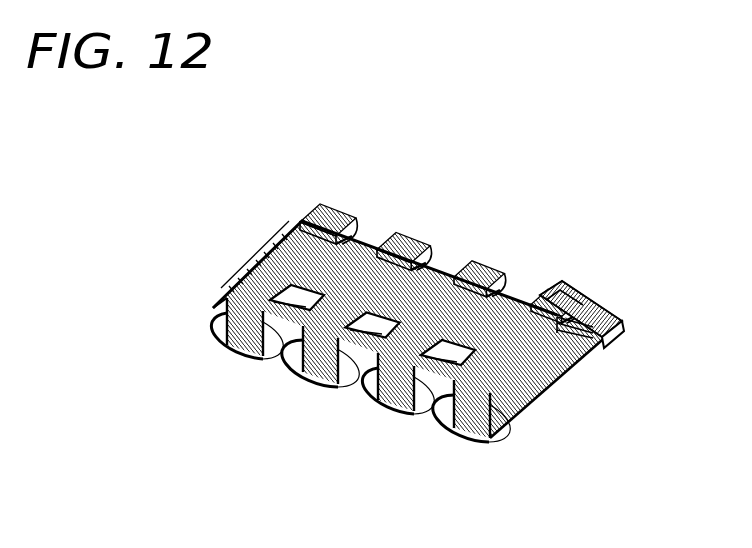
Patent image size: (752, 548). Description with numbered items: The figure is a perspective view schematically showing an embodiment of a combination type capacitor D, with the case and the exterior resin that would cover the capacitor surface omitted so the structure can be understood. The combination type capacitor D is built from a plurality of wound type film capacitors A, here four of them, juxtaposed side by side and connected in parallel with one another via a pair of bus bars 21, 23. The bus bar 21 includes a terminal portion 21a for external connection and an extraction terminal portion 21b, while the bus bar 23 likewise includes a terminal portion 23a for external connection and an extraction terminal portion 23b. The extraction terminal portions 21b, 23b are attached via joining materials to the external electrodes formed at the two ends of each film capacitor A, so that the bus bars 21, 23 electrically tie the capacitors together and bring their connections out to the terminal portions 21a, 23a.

The bus bar 21 is at (435, 374).
The terminal portion 21a is at (578, 365).
The extraction terminal portion 21b is at (392, 411).
The bus bar 23 is at (462, 235).
The terminal portion 23a is at (601, 315).
The extraction terminal portion 23b is at (547, 290).
The film capacitor A is at (312, 302).
The combination type capacitor D is at (623, 104).